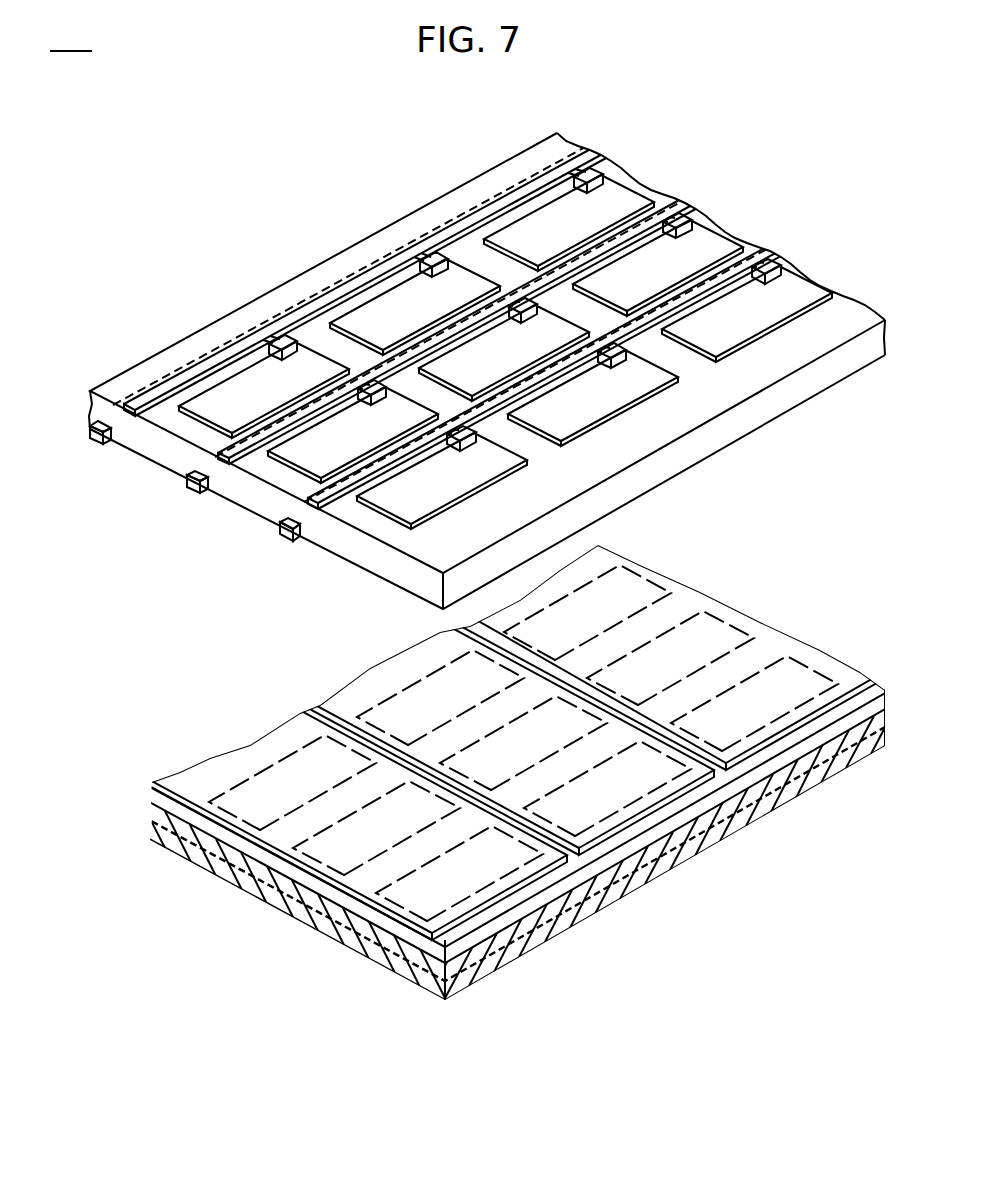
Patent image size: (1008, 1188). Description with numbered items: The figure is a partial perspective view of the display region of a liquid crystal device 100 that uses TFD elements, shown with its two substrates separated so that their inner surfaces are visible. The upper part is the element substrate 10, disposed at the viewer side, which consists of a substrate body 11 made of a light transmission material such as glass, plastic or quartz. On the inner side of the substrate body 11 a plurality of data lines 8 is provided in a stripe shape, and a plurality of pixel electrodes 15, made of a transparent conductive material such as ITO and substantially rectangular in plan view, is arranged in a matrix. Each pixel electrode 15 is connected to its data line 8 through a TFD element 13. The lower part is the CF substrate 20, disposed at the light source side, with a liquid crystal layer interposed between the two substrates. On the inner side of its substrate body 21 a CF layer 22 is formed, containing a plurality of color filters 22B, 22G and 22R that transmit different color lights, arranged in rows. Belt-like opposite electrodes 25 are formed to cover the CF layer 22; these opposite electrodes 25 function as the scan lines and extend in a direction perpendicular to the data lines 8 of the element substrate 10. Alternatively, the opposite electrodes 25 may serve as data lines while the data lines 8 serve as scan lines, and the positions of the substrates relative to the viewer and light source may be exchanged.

The liquid crystal device 100 is at (487, 528).
The element substrate 10 is at (485, 361).
The substrate body 11 is at (487, 371).
The data lines 8 is at (441, 358).
The TFD elements 13 is at (447, 307).
The pixel electrodes 15 is at (459, 377).
The CF substrate 20 is at (517, 761).
The substrate body 21 is at (519, 780).
The CF layer 22 is at (513, 837).
The color filter 22B is at (453, 669).
The color filter 22G is at (552, 710).
The color filter 22R is at (624, 753).
The opposite electrodes 25 is at (496, 714).